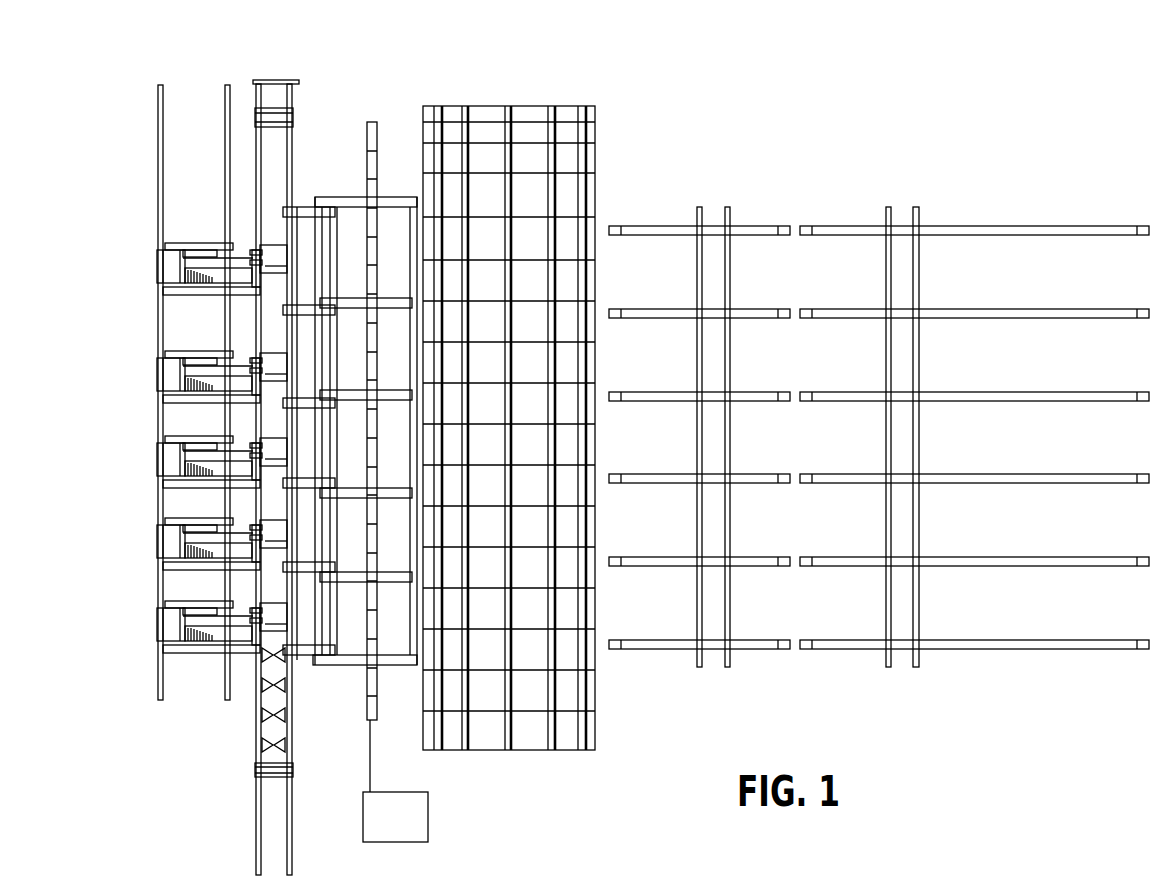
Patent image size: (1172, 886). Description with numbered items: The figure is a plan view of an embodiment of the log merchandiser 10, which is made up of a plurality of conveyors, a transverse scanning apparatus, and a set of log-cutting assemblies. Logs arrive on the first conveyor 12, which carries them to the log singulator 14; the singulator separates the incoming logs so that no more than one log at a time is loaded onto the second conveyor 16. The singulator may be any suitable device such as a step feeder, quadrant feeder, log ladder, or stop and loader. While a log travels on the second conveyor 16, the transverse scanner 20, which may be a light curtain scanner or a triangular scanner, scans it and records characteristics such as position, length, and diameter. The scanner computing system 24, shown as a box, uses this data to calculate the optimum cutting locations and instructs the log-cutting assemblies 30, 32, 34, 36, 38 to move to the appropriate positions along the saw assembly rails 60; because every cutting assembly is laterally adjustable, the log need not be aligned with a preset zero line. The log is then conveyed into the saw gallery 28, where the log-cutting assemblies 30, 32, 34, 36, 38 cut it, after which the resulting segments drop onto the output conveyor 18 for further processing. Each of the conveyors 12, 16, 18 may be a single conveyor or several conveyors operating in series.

The log merchandiser 10 is at (814, 96).
The first conveyor 12 is at (797, 208).
The log singulator 14 is at (525, 96).
The second conveyor 16 is at (321, 166).
The output conveyor 18 is at (280, 76).
The transverse scanner 20 is at (375, 124).
The scanner computing system 24 is at (428, 810).
The saw gallery 28 is at (193, 764).
The log-cutting assembly 30 is at (142, 626).
The log-cutting assembly 32 is at (142, 543).
The log-cutting assembly 34 is at (142, 461).
The log-cutting assembly 36 is at (142, 376).
The log-cutting assembly 38 is at (142, 268).
The saw assembly rails 60 is at (161, 85).